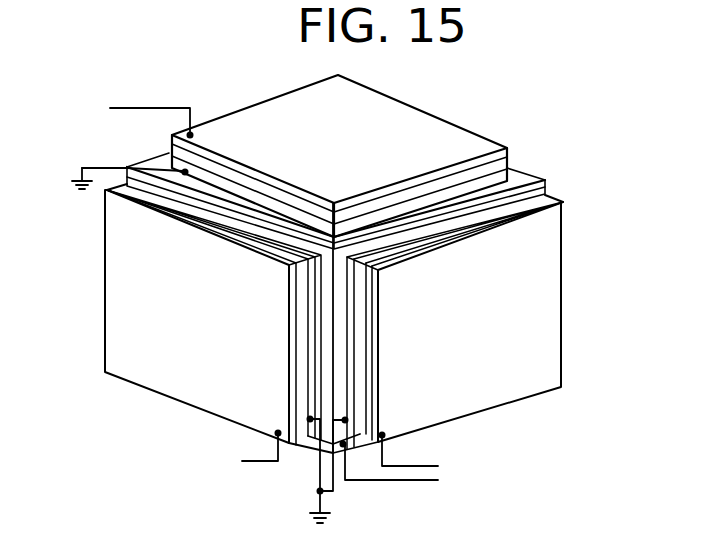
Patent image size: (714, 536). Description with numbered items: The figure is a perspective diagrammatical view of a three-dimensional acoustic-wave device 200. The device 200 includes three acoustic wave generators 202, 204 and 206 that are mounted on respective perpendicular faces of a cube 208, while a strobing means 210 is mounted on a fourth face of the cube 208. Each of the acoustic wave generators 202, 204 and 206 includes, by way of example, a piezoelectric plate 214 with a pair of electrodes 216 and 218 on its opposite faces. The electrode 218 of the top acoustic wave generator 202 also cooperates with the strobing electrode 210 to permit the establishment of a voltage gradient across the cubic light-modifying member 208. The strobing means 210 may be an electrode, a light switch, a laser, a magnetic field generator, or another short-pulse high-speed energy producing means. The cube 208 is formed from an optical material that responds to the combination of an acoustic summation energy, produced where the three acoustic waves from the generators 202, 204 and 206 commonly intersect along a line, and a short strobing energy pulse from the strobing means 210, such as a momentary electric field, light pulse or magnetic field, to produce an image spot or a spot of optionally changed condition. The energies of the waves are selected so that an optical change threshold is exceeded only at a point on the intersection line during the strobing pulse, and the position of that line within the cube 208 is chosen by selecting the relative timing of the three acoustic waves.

The three-dimensional device 200 is at (168, 87).
The acoustic wave generator 202 is at (517, 160).
The acoustic wave generator 204 is at (566, 201).
The acoustic wave generator 206 is at (173, 400).
The cube 208 is at (155, 162).
The strobing means 210 is at (313, 443).
The piezoelectric plate 214 is at (183, 229).
The electrode 216 is at (228, 237).
The electrode 218 is at (298, 281).